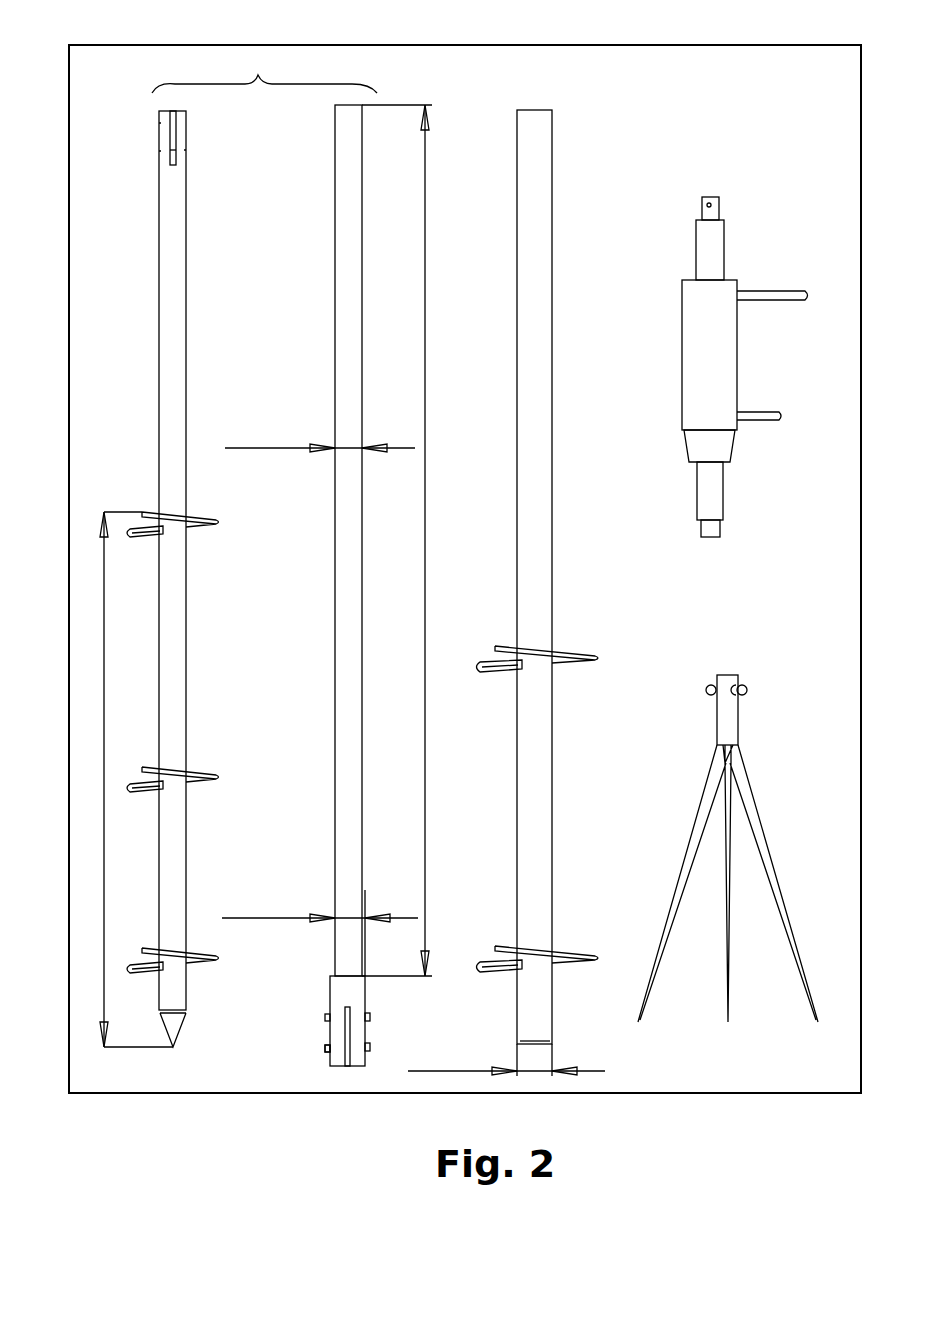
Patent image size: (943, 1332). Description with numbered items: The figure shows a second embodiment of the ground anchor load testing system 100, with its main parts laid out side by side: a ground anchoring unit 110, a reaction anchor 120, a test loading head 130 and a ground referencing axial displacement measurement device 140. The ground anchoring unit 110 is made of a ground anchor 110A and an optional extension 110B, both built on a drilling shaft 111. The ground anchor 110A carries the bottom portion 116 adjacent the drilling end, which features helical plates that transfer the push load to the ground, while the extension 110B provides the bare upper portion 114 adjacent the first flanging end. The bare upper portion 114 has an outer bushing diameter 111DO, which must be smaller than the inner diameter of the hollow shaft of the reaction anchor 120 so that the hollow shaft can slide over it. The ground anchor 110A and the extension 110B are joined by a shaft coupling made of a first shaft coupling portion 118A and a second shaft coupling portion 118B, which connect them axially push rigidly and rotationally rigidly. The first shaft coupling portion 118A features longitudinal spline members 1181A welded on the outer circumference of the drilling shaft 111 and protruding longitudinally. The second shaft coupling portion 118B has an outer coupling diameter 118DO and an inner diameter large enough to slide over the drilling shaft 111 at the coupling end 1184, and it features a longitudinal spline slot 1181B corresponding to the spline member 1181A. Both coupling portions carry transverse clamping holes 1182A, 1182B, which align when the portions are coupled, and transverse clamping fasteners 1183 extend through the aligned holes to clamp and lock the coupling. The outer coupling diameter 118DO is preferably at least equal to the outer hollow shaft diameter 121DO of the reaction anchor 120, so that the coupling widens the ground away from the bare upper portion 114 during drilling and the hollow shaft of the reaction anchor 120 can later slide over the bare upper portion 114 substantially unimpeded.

The ground anchor load testing system 100 is at (140, 1088).
The ground anchoring unit 110 is at (258, 72).
The ground anchor 110A is at (210, 255).
The extension 110B is at (332, 619).
The drilling shaft 111 is at (338, 396).
The outer bushing diameter 111DO is at (320, 439).
The bare upper portion 114 is at (397, 540).
The bottom portion 116 is at (126, 779).
The first shaft coupling portion 118A is at (146, 144).
The second shaft coupling portion 118B is at (357, 1054).
The outer coupling diameter 118DO is at (320, 933).
The longitudinal spline member 1181A is at (173, 152).
The longitudinal spline slot 1181B is at (346, 1060).
The transverse clamping holes 1182A is at (186, 150).
The transverse clamping holes 1182B is at (368, 1046).
The transverse clamping fasteners 1183 is at (299, 1059).
The coupling end 1184 is at (168, 110).
The reaction anchor 120 is at (577, 222).
The outer hollow shaft diameter 121DO is at (506, 1060).
The test loading head 130 is at (746, 237).
The ground referencing axial displacement measurement device 140 is at (762, 717).